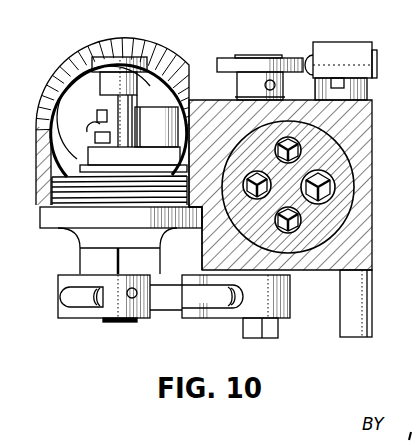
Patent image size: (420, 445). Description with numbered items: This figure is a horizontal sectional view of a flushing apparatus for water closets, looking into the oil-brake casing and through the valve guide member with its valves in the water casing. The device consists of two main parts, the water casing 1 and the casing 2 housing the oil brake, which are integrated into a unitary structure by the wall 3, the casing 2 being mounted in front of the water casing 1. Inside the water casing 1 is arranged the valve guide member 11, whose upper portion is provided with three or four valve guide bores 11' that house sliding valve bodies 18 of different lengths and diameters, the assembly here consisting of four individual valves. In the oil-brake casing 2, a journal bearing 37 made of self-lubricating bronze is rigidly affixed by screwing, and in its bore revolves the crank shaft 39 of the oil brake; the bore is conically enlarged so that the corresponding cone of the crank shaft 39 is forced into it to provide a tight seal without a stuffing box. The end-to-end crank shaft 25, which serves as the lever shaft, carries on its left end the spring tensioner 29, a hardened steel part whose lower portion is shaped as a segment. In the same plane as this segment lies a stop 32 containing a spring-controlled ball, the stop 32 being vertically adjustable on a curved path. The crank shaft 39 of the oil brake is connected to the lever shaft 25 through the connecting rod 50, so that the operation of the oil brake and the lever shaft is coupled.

The water casing 1 is at (360, 133).
The casing housing an oil brake 2 is at (72, 62).
The wall 3 is at (218, 120).
The valve guide member 11 is at (358, 187).
The valve guide bores 11' is at (343, 213).
The sliding valve bodies 18 is at (330, 180).
The crank shaft 25 is at (278, 58).
The spring tensioner 29 is at (253, 80).
The stop 32 is at (340, 63).
The journal bearing 37 is at (115, 175).
The crank shaft 39 is at (115, 135).
The connecting rod 50 is at (77, 298).